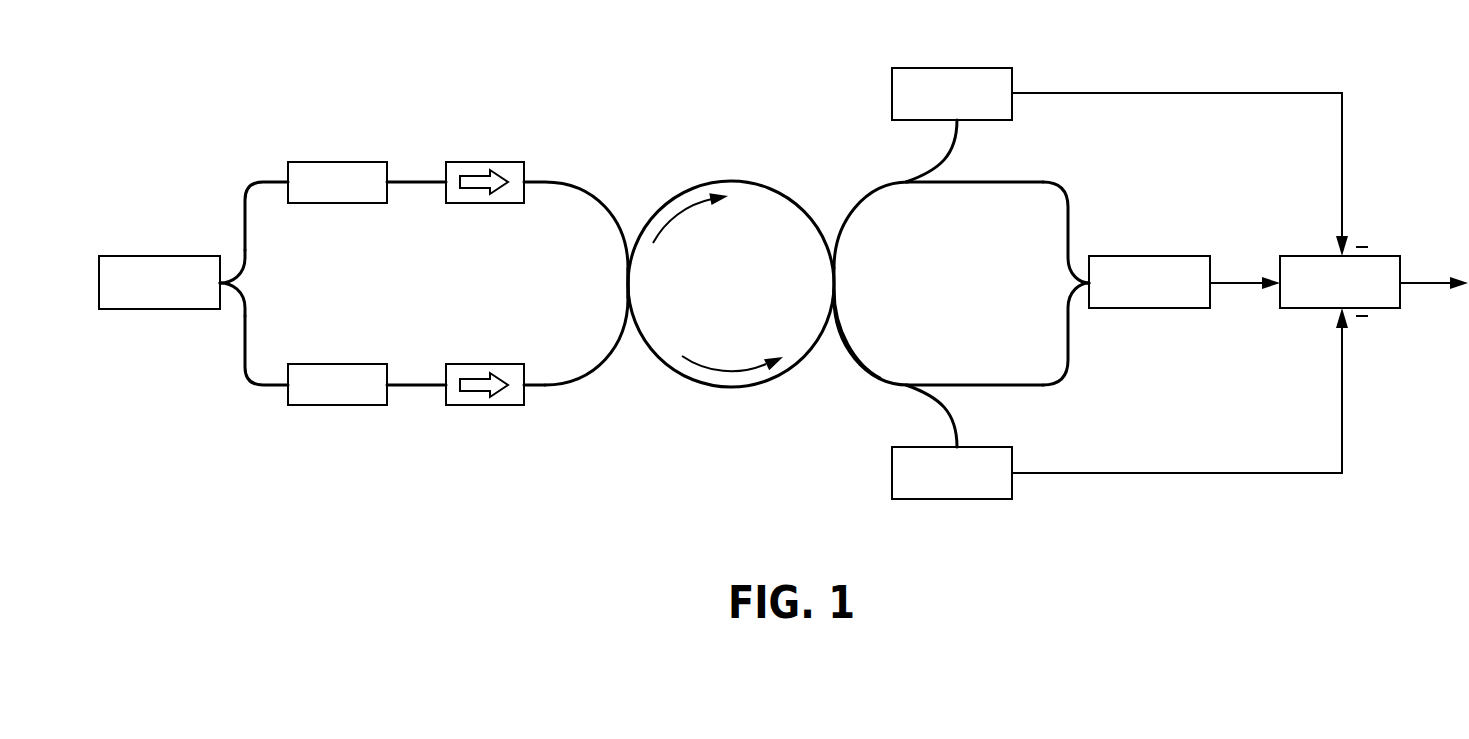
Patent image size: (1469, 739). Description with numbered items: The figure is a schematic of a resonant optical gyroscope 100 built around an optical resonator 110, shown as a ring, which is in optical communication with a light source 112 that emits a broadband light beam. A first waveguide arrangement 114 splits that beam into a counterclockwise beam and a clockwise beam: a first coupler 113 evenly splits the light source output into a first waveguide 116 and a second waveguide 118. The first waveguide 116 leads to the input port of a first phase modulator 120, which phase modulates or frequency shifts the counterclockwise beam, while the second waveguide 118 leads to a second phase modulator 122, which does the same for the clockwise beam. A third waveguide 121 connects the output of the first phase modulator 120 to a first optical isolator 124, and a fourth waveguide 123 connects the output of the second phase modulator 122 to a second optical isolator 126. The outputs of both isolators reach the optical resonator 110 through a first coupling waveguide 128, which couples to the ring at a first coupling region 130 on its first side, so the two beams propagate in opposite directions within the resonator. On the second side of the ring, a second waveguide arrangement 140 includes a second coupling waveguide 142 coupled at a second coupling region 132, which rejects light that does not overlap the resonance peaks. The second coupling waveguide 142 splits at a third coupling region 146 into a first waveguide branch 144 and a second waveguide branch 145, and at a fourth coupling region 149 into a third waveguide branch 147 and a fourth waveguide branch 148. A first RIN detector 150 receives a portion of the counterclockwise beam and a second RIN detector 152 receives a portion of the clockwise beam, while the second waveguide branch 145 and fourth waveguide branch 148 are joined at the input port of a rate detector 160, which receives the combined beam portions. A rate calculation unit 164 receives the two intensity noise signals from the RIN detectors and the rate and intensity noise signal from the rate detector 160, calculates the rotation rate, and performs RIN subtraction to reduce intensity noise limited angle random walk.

The resonant optical gyroscope 100 is at (619, 95).
The optical resonator 110 is at (742, 181).
The light source 112 is at (163, 256).
The first coupler 113 is at (225, 296).
The first waveguide arrangement 114 is at (417, 430).
The first waveguide 116 is at (244, 228).
The second waveguide 118 is at (244, 356).
The first phase modulator 120 is at (357, 162).
The third waveguide 121 is at (403, 182).
The second phase modulator 122 is at (364, 364).
The fourth waveguide 123 is at (434, 364).
The first optical isolator 124 is at (501, 162).
The second optical isolator 126 is at (501, 364).
The first coupling waveguide 128 is at (607, 358).
The first coupling region 130 is at (631, 278).
The second coupling region 132 is at (832, 285).
The second waveguide arrangement 140 is at (1095, 183).
The second coupling waveguide 142 is at (857, 358).
The first waveguide branch 144 is at (950, 147).
The second waveguide branch 145 is at (1003, 183).
The third coupling region 146 is at (908, 184).
The third waveguide branch 147 is at (955, 418).
The fourth waveguide branch 148 is at (1003, 385).
The fourth coupling region 149 is at (905, 383).
The first RIN detector 150 is at (957, 68).
The second RIN detector 152 is at (956, 499).
The rate detector 160 is at (1130, 256).
The rate calculation unit 164 is at (1323, 256).